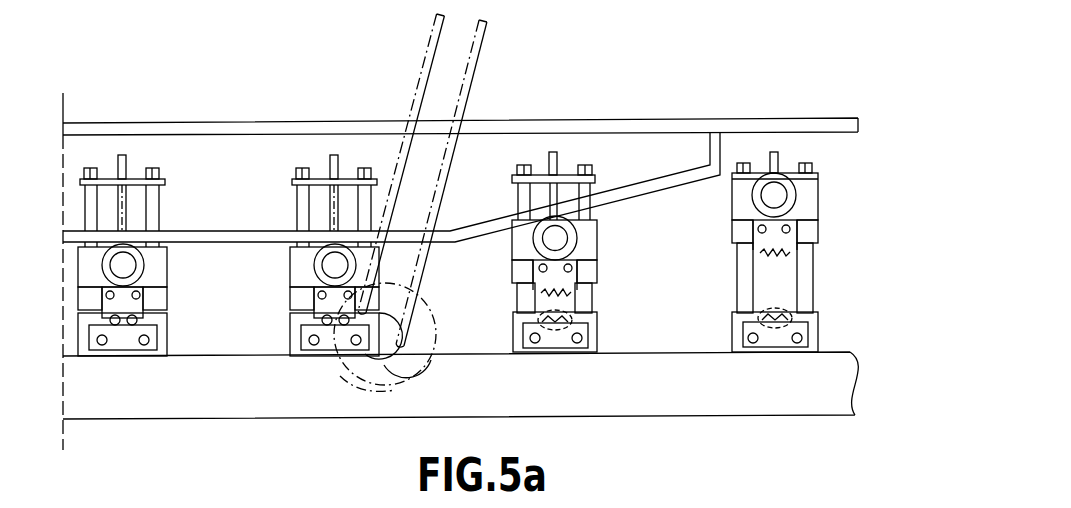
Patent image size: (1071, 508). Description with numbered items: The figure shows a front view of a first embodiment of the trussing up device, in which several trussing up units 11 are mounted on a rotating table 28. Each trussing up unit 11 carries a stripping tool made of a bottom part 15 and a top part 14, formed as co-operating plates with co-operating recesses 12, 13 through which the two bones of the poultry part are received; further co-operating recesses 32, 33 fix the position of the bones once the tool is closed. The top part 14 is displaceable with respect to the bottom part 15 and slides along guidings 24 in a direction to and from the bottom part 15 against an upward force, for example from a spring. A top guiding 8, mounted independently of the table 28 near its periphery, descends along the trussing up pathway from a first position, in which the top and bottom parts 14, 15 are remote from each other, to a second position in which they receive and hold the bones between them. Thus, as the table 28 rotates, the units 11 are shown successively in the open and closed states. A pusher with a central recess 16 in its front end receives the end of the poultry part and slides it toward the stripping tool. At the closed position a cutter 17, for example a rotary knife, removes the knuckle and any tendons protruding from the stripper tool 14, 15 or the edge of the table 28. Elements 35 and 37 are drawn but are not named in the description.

The top guiding 8 is at (661, 181).
The trussing up unit 11 is at (785, 256).
The recess 12 is at (763, 313).
The recess 13 is at (797, 313).
The top part of the stripping tool 14 is at (790, 237).
The bottom part of the stripping tool 15 is at (803, 325).
The central recess 16 is at (118, 205).
The cutter 17 is at (432, 384).
The guiding 24 is at (747, 258).
The rotating table 28 is at (162, 402).
The co-operating recess 32 is at (762, 253).
The co-operating recess 33 is at (780, 257).
The clamping unit 35 is at (598, 323).
The head block 37 is at (812, 192).